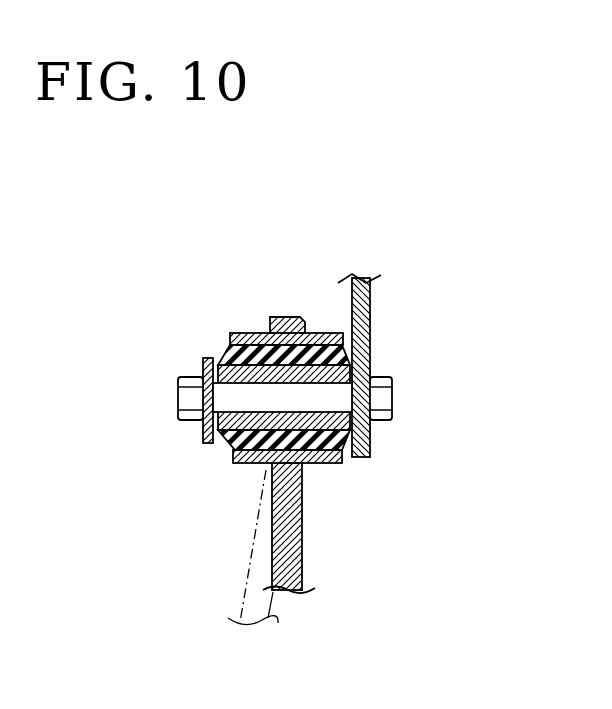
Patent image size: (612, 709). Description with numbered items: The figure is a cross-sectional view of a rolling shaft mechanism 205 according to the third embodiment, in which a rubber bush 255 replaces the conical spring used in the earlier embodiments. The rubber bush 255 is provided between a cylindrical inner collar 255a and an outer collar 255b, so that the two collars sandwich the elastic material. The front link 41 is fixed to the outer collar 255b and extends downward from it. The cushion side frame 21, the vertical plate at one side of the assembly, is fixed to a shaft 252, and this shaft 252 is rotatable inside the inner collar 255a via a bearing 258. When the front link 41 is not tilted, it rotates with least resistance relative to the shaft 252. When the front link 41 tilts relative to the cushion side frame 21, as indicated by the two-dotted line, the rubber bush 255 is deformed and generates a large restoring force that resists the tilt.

The rolling shaft mechanism 205 is at (274, 337).
The cushion side frame 21 is at (370, 305).
The front link 41 is at (302, 520).
The shaft 252 is at (316, 420).
The rubber bush 255 is at (270, 320).
The cylindrical inner collar 255a is at (323, 333).
The outer collar 255b is at (230, 333).
The bearing 258 is at (216, 362).